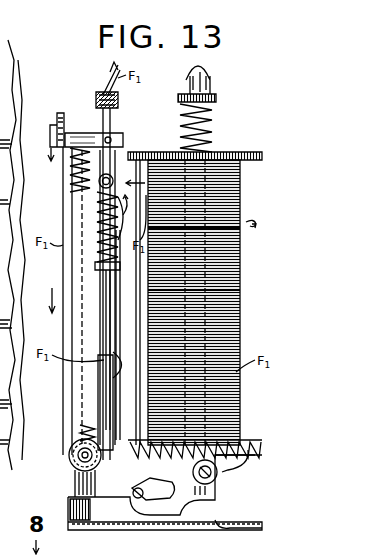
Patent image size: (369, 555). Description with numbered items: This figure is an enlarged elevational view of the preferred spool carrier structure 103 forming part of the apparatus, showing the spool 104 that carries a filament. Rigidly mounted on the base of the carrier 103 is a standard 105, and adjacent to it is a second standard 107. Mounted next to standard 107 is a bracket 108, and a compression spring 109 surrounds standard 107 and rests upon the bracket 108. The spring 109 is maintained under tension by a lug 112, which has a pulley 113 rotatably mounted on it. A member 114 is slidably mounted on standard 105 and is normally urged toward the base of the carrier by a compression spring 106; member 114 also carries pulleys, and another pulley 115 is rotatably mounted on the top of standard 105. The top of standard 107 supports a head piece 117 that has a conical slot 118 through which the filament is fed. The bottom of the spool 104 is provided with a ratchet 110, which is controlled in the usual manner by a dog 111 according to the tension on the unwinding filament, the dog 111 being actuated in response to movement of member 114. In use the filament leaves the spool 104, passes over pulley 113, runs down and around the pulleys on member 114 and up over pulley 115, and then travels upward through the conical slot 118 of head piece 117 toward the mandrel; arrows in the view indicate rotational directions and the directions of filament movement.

The spool carrier structure 103 is at (229, 511).
The spool 104 is at (238, 282).
The standard 105 is at (84, 196).
The compression spring 106 is at (72, 172).
The standard 107 is at (106, 322).
The bracket 108 is at (112, 372).
The compression spring 109 is at (104, 258).
The ratchet 110 is at (246, 440).
The dog 111 is at (160, 480).
The lug 112 is at (114, 172).
The pulley 113 is at (98, 214).
The member 114 is at (72, 476).
The pulley 115 is at (57, 121).
The head piece 117 is at (118, 100).
The conical slot 118 is at (106, 92).